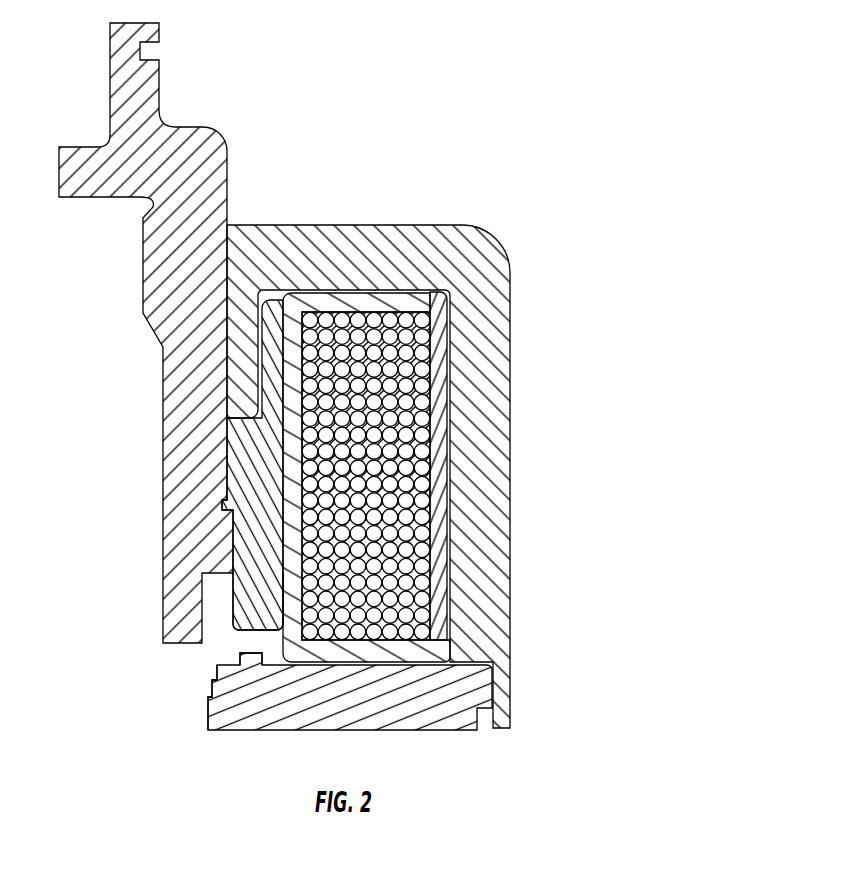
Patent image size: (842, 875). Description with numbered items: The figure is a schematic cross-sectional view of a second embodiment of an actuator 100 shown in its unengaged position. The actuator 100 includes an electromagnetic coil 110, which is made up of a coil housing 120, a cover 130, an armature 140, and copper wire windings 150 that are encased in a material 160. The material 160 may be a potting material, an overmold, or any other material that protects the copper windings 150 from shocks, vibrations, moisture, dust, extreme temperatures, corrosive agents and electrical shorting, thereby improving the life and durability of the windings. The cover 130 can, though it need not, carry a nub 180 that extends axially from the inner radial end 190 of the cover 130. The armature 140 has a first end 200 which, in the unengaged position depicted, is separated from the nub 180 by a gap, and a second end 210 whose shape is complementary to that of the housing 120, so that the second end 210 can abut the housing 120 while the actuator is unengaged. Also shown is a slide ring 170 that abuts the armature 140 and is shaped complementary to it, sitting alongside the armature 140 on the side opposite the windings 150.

The actuator 100 is at (462, 110).
The electromagnetic coil 110 is at (512, 500).
The coil housing 120 is at (348, 252).
The cover 130 is at (310, 715).
The armature 140 is at (247, 455).
The copper wire windings 150 is at (370, 465).
The material 160 is at (438, 422).
The slide ring 170 is at (160, 257).
The nub 180 is at (240, 655).
The inner radial end 190 is at (220, 710).
The first end 200 is at (250, 590).
The second end 210 is at (273, 343).